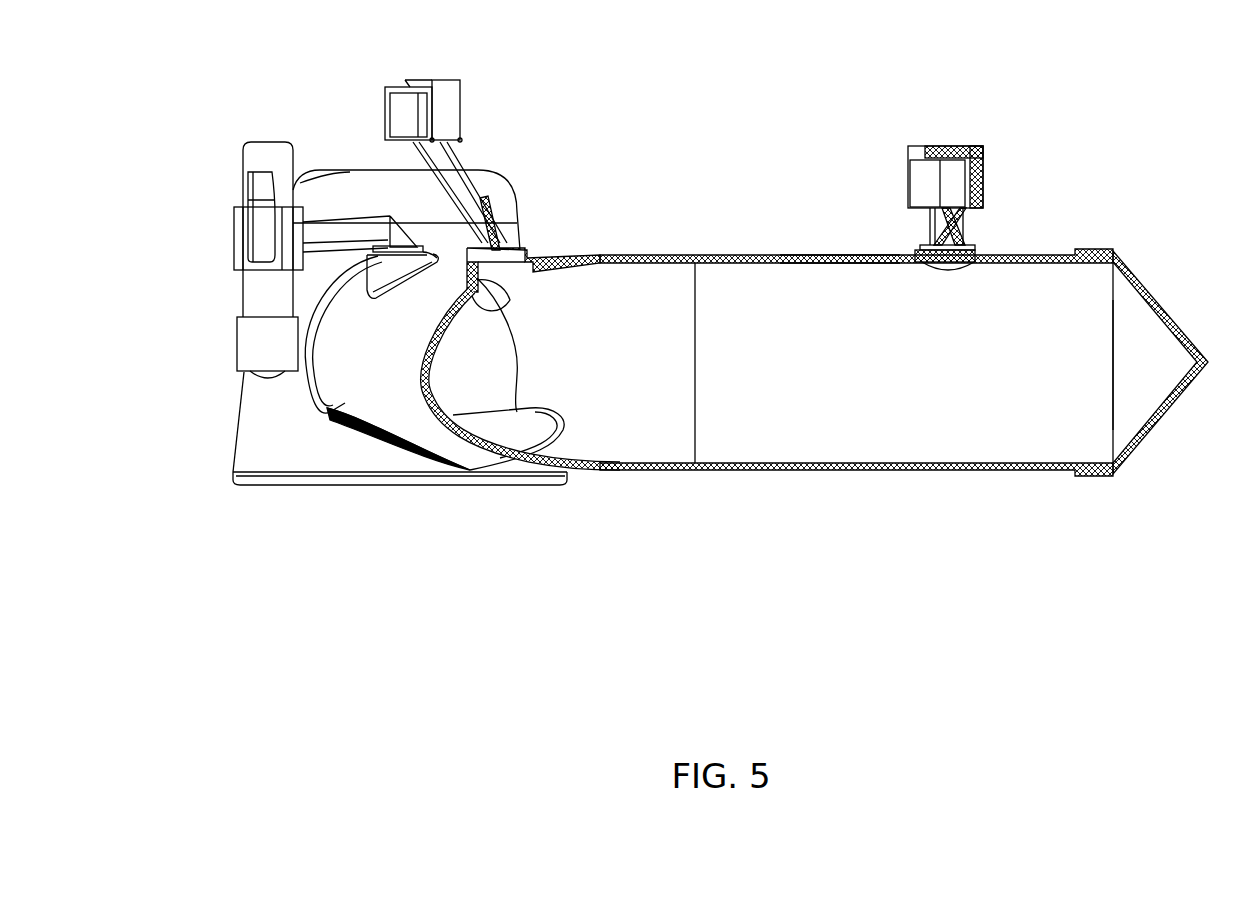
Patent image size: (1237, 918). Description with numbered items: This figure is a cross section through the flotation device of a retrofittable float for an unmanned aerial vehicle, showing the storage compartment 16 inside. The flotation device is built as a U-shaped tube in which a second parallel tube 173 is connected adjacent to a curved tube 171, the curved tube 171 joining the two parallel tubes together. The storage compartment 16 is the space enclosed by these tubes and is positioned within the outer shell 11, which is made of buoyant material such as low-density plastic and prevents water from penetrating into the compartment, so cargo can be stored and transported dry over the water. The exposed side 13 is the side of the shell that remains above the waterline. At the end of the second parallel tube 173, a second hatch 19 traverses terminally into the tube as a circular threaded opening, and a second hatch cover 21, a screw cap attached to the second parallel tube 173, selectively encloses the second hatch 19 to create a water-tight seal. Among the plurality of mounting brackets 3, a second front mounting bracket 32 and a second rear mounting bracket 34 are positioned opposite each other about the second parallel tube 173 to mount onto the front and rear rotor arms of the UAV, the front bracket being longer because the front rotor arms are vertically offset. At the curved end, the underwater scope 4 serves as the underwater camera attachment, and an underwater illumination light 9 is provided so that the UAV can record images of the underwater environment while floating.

The mounting brackets 3 is at (478, 118).
The underwater scope 4 is at (247, 415).
The underwater illumination light 9 is at (243, 332).
The outer shell 11 is at (787, 471).
The exposed side 13 is at (765, 254).
The storage compartment 16 is at (946, 439).
The second hatch 19 is at (1106, 445).
The second hatch cover 21 is at (1160, 300).
The second front mounting bracket 32 is at (945, 147).
The second rear mounting bracket 34 is at (443, 80).
The curved tube 171 is at (337, 410).
The second parallel tube 173 is at (800, 254).